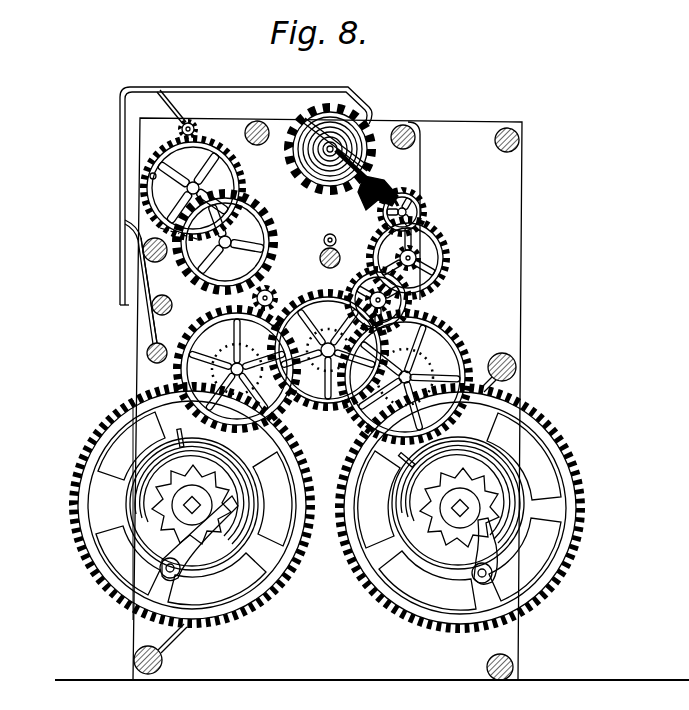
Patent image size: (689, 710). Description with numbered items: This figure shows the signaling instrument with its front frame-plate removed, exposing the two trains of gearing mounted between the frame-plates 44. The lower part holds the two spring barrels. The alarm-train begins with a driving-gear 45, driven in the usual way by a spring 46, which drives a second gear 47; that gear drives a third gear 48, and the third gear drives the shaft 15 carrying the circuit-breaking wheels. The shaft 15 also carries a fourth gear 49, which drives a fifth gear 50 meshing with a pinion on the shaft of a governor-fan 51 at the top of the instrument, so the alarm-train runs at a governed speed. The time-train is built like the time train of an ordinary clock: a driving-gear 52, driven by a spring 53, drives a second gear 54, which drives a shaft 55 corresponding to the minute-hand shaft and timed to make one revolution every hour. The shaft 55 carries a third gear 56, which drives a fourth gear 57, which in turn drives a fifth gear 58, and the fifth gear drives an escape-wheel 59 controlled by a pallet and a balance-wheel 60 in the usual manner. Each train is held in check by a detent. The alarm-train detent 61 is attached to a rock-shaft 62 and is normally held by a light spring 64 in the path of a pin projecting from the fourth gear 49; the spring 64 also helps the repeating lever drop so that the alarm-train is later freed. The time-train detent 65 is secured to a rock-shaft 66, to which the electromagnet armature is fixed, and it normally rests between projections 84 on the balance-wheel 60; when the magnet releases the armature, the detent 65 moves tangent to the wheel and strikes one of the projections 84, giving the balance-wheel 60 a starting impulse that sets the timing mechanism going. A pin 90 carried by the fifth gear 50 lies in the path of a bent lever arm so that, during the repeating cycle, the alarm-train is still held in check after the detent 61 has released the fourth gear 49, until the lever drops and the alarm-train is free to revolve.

The shaft 15 is at (228, 240).
The frame-plates 44 is at (372, 399).
The driving-gear 45 is at (82, 522).
The spring 46 is at (181, 499).
The second gear 47 is at (180, 365).
The third gear 48 is at (304, 252).
The fourth gear 49 is at (270, 224).
The fifth gear 50 is at (210, 190).
The governor-fan 51 is at (177, 109).
The driving-gear 52 is at (584, 510).
The spring 53 is at (445, 565).
The second gear 54 is at (450, 342).
The shaft 55 is at (328, 354).
The third gear 56 is at (352, 432).
The fourth gear 57 is at (430, 309).
The fifth gear 58 is at (452, 262).
The escape-wheel 59 is at (428, 207).
The balance-wheel 60 is at (370, 156).
The detent 61 is at (132, 223).
The rock-shaft 62 is at (148, 351).
The spring 64 is at (150, 342).
The detent 65 is at (246, 186).
The rock-shaft 66 is at (165, 293).
The projections 84 is at (370, 110).
The pin 90 is at (150, 176).